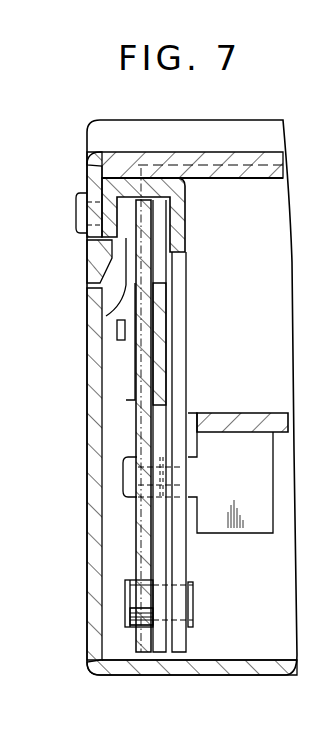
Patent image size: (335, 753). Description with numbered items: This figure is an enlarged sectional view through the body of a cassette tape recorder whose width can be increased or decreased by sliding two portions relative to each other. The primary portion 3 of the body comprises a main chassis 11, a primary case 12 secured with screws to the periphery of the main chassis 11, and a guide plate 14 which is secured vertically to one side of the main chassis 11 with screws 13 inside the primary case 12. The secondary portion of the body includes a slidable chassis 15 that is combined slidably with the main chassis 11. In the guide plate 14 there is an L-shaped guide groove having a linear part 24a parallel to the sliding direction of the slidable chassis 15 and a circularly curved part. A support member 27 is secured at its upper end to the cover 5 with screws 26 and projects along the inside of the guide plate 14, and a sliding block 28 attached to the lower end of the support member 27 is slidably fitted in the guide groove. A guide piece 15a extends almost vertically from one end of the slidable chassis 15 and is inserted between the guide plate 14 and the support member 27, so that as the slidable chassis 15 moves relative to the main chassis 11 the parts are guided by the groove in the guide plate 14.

The primary portion 3 is at (323, 694).
The cover 5 is at (222, 135).
The main chassis 11 is at (247, 427).
The primary case 12 is at (96, 497).
The screws 13 is at (125, 475).
The guide plate 14 is at (140, 423).
The slidable chassis 15 is at (163, 655).
The guide piece 15a is at (108, 315).
The screws 26 is at (78, 205).
The support member 27 is at (177, 307).
The sliding block 28 is at (143, 597).
The linear part 24a is at (133, 612).